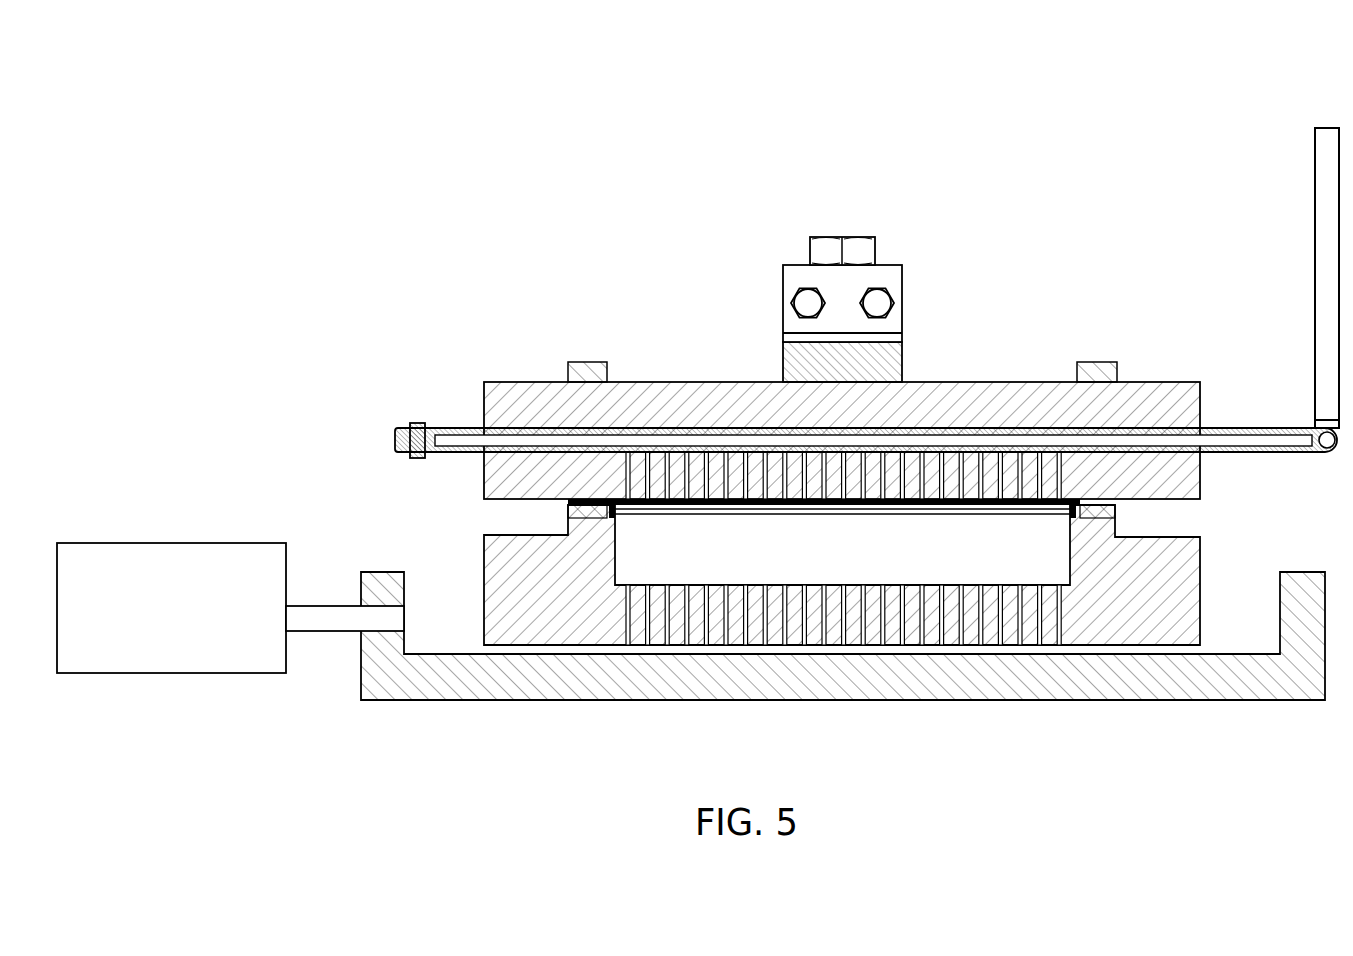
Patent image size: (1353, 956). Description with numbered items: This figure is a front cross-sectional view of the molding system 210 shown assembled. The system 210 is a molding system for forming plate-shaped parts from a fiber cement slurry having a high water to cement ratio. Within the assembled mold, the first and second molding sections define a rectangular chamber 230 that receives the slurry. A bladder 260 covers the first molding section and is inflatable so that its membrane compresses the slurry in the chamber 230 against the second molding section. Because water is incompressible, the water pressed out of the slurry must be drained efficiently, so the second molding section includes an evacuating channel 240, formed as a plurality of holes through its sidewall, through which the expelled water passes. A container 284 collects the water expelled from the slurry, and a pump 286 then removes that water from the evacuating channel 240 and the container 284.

The system 210 is at (329, 106).
The chamber 230 is at (842, 628).
The evacuating channel 240 is at (1036, 647).
The bladder 260 is at (838, 515).
The container 284 is at (503, 677).
The pump 286 is at (174, 543).